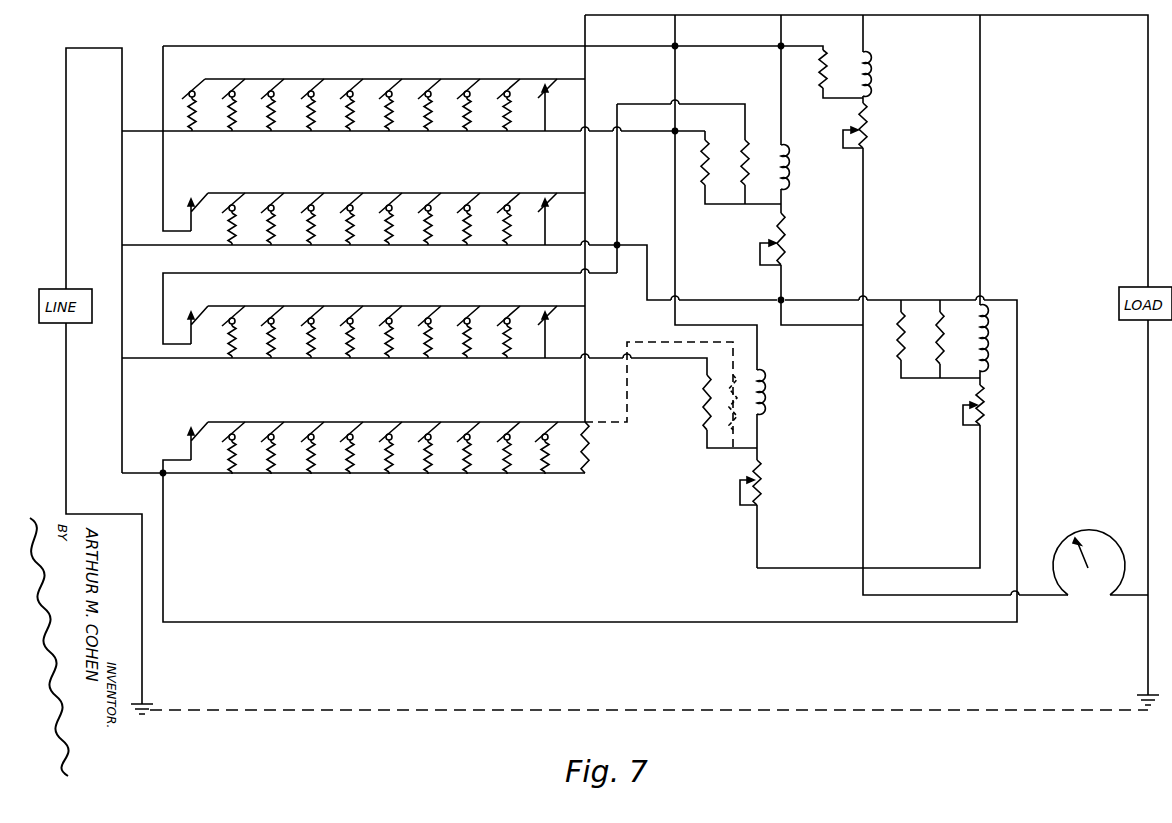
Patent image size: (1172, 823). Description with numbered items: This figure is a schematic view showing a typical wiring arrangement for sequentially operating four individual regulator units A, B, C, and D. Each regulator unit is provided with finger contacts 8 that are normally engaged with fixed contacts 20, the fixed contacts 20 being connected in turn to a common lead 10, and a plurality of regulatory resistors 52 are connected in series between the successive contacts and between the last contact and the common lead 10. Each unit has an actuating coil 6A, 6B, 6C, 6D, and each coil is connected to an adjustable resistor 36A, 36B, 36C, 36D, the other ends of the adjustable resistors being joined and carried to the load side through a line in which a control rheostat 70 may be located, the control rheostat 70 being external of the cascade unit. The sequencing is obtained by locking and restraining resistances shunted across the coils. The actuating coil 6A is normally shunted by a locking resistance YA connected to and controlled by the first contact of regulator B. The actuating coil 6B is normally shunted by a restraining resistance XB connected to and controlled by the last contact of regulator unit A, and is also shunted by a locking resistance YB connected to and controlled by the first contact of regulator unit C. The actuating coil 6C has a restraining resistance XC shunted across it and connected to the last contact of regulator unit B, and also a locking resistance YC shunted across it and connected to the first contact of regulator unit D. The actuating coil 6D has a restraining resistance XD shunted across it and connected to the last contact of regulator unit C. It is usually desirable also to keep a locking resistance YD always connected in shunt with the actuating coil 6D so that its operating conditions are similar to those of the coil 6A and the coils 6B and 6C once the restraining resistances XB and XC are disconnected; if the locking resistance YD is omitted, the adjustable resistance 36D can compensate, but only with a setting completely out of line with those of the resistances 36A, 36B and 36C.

The finger contacts 8 is at (237, 81).
The fixed contacts 20 is at (234, 95).
The common lead 10 is at (420, 79).
The regulatory resistors 52 is at (388, 129).
The regulator unit A is at (342, 69).
The regulator unit B is at (342, 184).
The regulator unit C is at (350, 303).
The regulator unit D is at (354, 414).
The locking resistance YA is at (822, 80).
The actuating coil 6A is at (869, 71).
The adjustable resistor 36A is at (866, 128).
The restraining resistance XB is at (710, 157).
The locking resistance YB is at (750, 156).
The actuating coil 6B is at (788, 174).
The adjustable resistor 36B is at (788, 235).
The restraining resistance XC is at (895, 346).
The locking resistance YC is at (933, 332).
The actuating coil 6C is at (980, 350).
The adjustable resistance 36C is at (980, 422).
The restraining resistance XD is at (702, 406).
The locking resistance YD is at (718, 424).
The actuating coil 6D is at (763, 395).
The adjustable resistance 36D is at (767, 484).
The control rheostat 70 is at (1097, 540).